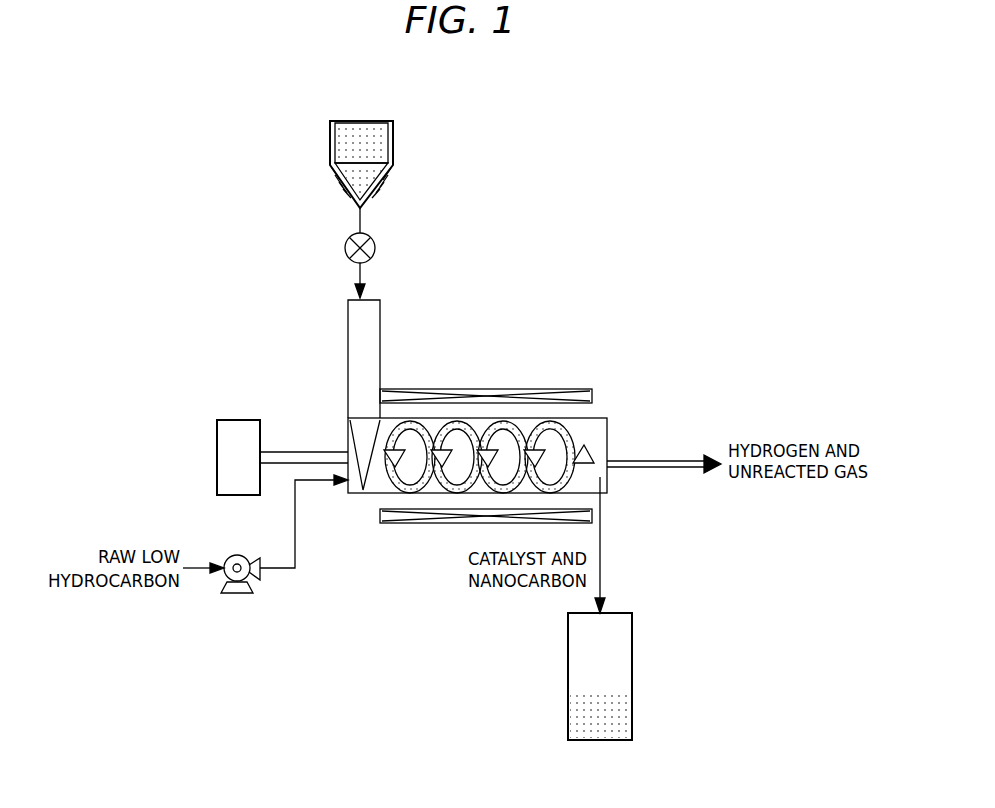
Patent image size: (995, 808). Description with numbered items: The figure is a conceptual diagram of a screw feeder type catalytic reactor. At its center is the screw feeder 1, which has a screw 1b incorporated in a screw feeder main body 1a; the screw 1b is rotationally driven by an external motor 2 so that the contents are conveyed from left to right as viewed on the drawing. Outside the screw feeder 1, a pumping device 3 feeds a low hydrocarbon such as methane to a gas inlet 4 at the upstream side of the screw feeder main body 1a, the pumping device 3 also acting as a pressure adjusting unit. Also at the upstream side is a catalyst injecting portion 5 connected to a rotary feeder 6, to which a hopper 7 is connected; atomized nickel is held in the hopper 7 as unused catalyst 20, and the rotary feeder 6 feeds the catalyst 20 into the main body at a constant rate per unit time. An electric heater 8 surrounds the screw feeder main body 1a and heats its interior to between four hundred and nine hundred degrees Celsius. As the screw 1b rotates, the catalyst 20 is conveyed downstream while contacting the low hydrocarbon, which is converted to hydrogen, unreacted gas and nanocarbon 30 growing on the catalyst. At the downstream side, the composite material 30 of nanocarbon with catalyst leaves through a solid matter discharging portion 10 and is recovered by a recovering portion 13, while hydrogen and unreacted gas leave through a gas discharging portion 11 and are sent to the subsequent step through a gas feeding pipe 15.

The screw feeder 1 is at (513, 401).
The screw feeder main body 1a is at (597, 416).
The screw 1b is at (573, 438).
The motor 2 is at (215, 457).
The pumping device 3 is at (223, 557).
The gas inlet 4 is at (347, 483).
The catalyst injecting portion 5 is at (360, 396).
The rotary feeder 6 is at (376, 246).
The hopper 7 is at (393, 148).
The electric heater 8 is at (508, 388).
The solid matter discharging portion 10 is at (602, 493).
The gas discharging portion 11 is at (612, 457).
The recovering portion 13 is at (632, 640).
The gas feeding pipe 15 is at (682, 457).
The catalyst 20 is at (342, 147).
The nanocarbon 30 is at (577, 715).